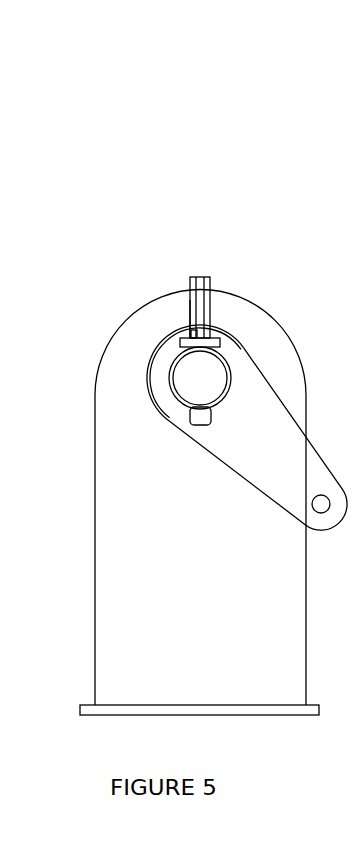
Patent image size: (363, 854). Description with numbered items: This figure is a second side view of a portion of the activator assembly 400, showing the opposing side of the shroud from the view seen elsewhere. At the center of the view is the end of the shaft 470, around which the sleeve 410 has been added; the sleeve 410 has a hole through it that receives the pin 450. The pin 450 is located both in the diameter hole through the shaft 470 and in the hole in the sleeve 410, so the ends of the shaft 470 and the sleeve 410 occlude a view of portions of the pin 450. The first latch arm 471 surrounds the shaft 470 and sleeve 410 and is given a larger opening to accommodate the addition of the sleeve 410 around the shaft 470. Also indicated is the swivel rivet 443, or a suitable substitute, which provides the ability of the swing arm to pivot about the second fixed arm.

The actuator assembly 400 is at (162, 210).
The sleeve 410 is at (212, 360).
The swivel rivet 443 is at (190, 308).
The pin 450 is at (198, 412).
The shaft 470 is at (208, 367).
The first latch arm 471 is at (247, 427).